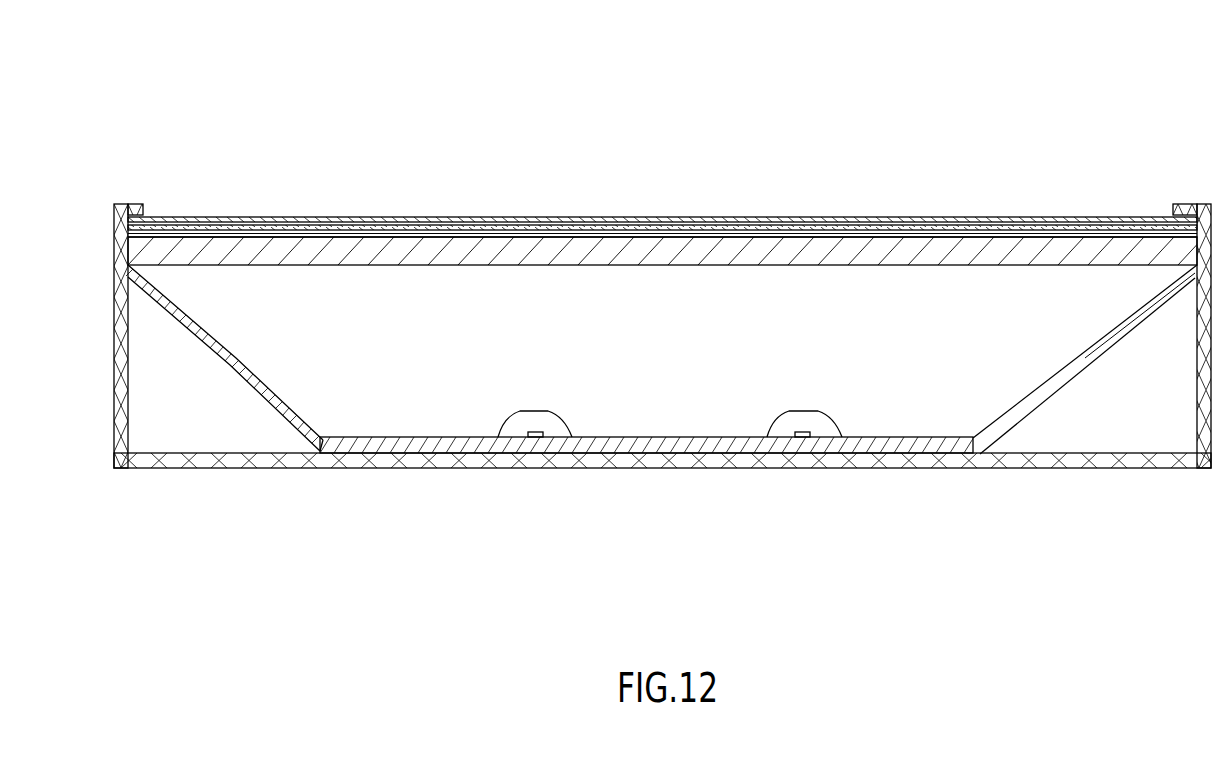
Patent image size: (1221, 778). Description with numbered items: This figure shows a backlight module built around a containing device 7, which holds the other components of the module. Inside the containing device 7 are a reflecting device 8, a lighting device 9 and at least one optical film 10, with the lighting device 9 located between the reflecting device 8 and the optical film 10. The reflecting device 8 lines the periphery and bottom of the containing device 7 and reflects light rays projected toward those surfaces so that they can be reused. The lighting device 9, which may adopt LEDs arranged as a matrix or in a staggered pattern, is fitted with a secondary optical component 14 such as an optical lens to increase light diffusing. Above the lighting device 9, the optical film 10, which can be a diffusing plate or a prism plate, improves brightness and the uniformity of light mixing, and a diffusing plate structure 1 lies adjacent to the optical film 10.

The diffusing plate structure 1 is at (457, 248).
The containing device 7 is at (1014, 460).
The reflecting device 8 is at (183, 305).
The lighting device 9 is at (803, 425).
The optical film 10 is at (330, 222).
The secondary optical component 14 is at (536, 425).